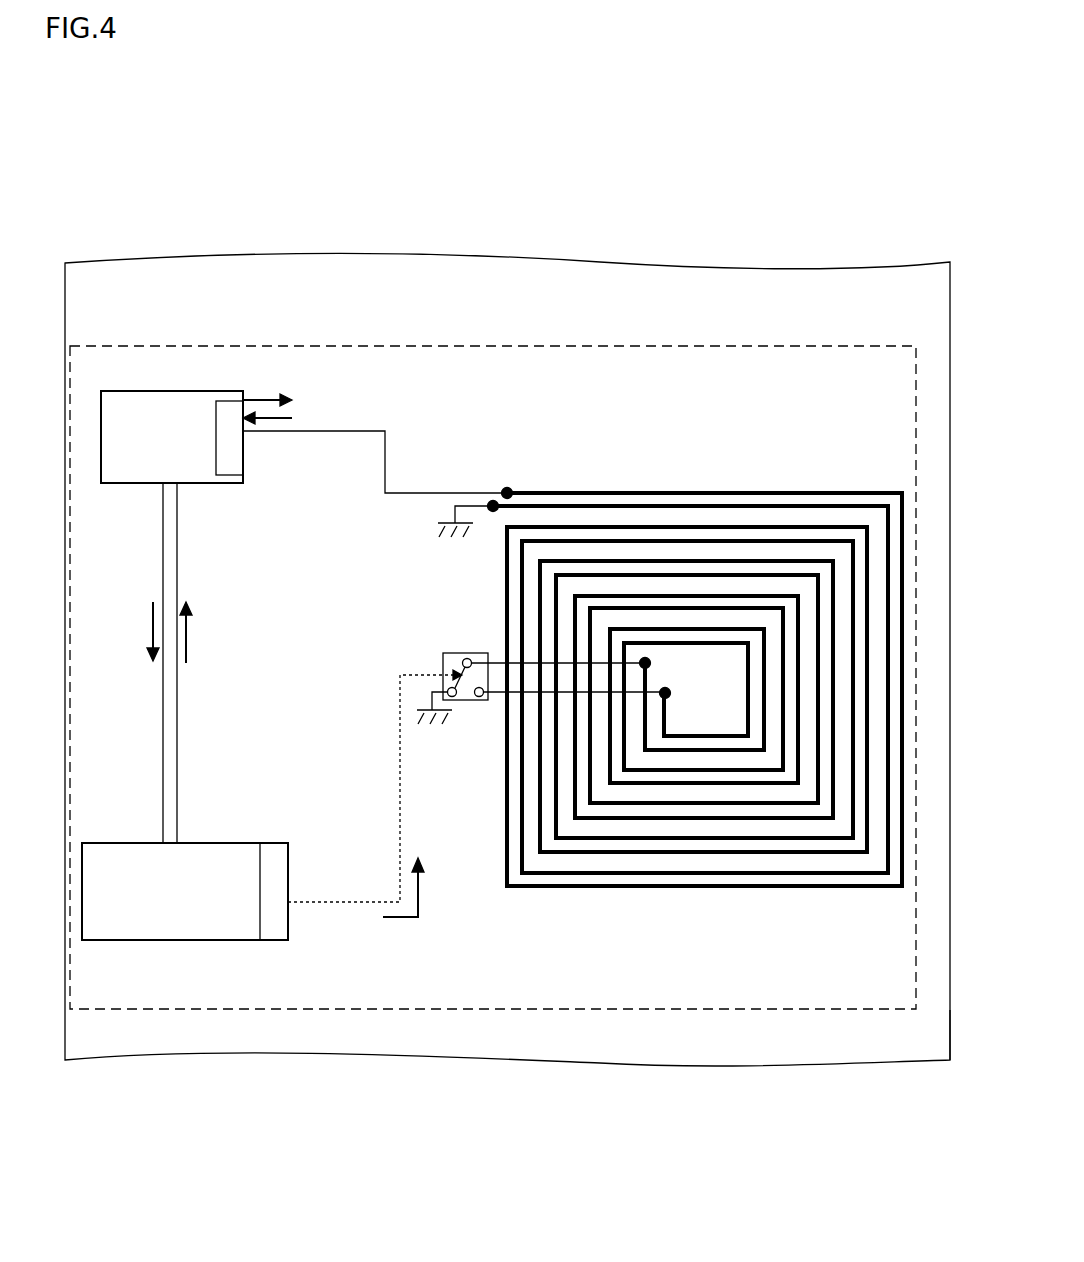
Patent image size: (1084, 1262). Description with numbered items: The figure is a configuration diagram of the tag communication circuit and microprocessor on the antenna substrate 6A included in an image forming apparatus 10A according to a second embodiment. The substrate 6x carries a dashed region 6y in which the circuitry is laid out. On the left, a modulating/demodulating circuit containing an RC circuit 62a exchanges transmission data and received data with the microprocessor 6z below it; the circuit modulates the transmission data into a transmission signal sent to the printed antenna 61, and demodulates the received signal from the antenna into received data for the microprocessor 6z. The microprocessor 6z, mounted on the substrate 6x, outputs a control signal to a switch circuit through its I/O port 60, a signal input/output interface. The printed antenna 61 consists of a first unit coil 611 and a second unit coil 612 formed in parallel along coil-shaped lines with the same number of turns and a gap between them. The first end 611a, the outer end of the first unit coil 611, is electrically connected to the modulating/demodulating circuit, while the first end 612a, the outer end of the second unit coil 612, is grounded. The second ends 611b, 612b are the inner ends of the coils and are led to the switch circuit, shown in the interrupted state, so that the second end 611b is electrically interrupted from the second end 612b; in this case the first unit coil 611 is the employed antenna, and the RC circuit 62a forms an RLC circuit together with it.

The image forming apparatus 10A is at (128, 200).
The antenna substrate 6A is at (862, 266).
The antenna area 6y is at (803, 345).
The substrate 6x is at (950, 1023).
The RC circuit 62a is at (232, 476).
The I/O port 60 is at (260, 940).
The microprocessor 6z is at (137, 843).
The printed antenna 61 is at (748, 483).
The first unit coil 611 is at (703, 890).
The second unit coil 612 is at (760, 875).
The first end of first unit coil 611a is at (509, 489).
The first end of second unit coil 612a is at (491, 510).
The second end of first unit coil 611b is at (647, 659).
The second end of second unit coil 612b is at (668, 689).